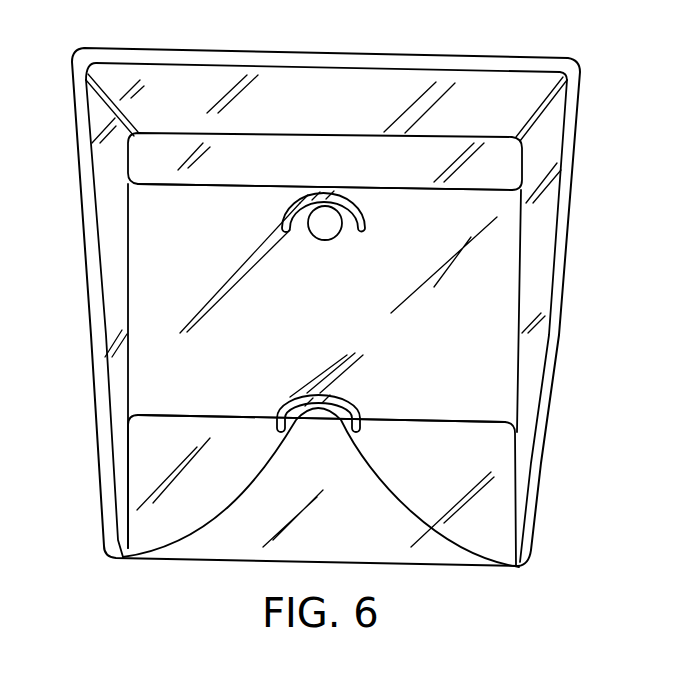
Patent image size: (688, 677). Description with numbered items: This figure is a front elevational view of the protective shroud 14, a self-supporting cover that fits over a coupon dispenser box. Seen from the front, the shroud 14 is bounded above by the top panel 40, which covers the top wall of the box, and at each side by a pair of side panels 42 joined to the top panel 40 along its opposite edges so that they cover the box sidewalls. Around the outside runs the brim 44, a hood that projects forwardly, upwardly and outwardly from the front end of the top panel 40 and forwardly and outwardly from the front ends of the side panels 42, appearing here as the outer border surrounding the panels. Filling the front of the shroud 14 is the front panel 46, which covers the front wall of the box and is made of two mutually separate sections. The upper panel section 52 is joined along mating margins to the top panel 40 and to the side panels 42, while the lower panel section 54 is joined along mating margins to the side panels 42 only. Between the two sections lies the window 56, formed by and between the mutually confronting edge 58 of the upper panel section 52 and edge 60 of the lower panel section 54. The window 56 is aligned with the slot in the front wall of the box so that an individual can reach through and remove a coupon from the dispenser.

The protective shroud 14 is at (532, 38).
The top panel 40 is at (278, 133).
The side panels 42 is at (128, 308).
The brim 44 is at (180, 58).
The front panel 46 is at (340, 147).
The upper panel section 52 is at (499, 152).
The lower panel section 54 is at (494, 473).
The window 56 is at (496, 355).
The edge of upper panel 58 is at (200, 186).
The edge of lower panel 60 is at (226, 416).